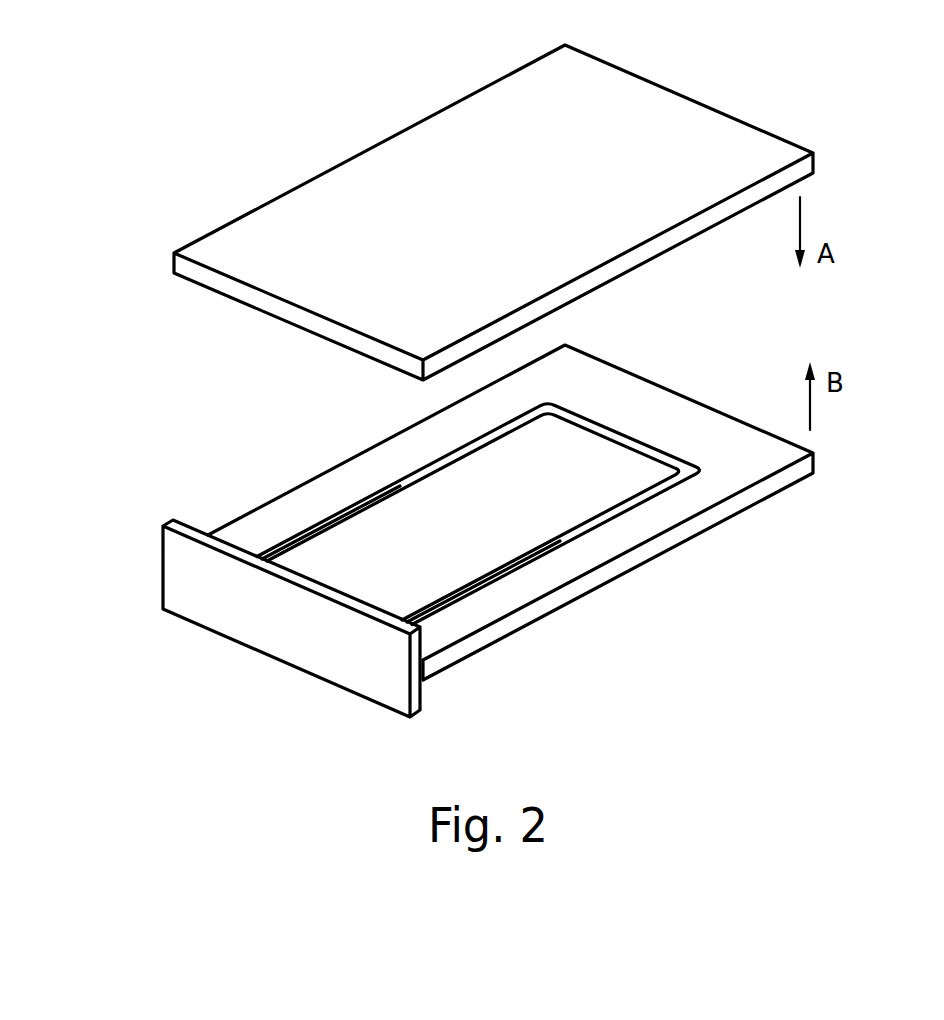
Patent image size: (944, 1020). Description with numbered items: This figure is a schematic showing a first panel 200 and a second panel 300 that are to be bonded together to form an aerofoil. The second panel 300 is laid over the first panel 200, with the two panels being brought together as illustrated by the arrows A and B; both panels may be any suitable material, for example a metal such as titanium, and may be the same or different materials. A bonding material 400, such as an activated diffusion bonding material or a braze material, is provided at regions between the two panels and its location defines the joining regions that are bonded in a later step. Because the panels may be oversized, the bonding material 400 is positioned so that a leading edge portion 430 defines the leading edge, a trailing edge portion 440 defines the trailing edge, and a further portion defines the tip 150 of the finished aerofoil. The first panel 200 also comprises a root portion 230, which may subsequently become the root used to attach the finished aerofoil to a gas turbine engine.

The second panel 300 is at (682, 117).
The first panel 200 is at (700, 522).
The root portion 230 is at (173, 565).
The bonding material 400 is at (600, 427).
The tip 150 is at (648, 448).
The leading edge portion 430 is at (362, 503).
The trailing edge portion 440 is at (493, 580).